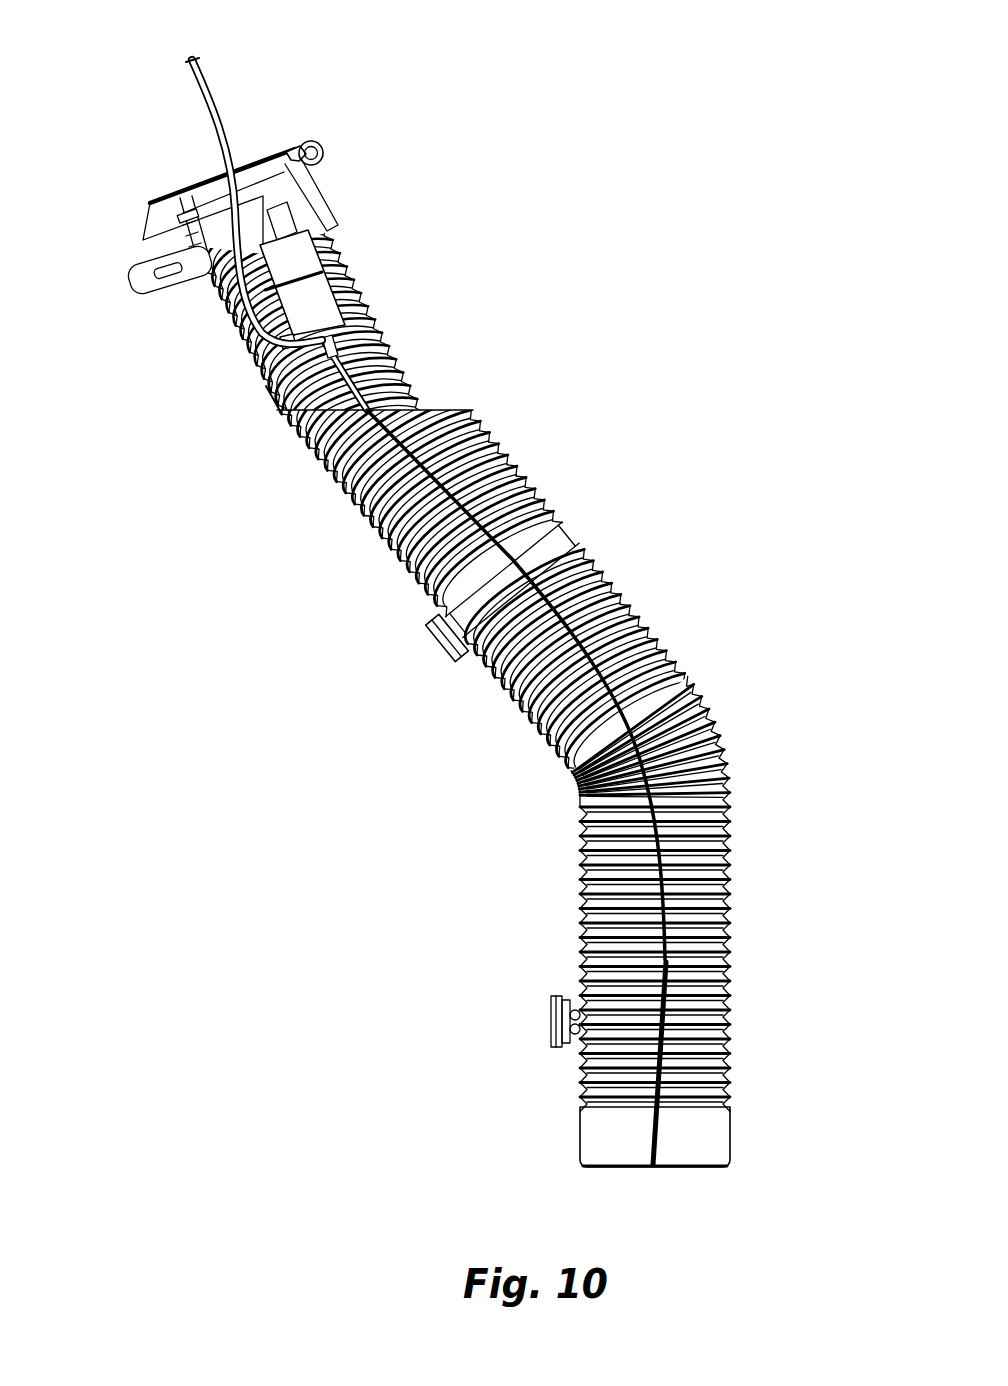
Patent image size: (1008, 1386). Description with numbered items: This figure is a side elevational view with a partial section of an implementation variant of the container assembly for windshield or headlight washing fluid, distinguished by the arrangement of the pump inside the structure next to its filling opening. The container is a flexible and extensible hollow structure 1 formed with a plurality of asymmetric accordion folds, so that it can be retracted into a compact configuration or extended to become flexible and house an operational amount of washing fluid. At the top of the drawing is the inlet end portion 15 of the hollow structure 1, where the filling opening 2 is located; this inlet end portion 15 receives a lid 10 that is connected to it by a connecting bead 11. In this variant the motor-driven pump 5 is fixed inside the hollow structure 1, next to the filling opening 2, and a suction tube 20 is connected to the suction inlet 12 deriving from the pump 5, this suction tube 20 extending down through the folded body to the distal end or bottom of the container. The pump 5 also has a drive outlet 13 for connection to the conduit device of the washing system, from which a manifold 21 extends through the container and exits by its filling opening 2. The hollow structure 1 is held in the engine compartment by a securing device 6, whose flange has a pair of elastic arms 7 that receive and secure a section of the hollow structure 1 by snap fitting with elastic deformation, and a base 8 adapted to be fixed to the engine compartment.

The hollow structure 1 is at (715, 645).
The filling opening 2 is at (302, 197).
The motor-driven pump 5 is at (360, 273).
The securing device 6 is at (440, 653).
The elastic arms 7 is at (566, 540).
The base 8 is at (468, 657).
The lid 10 is at (288, 147).
The connecting bead 11 is at (330, 143).
The suction inlet 12 is at (343, 334).
The drive outlet 13 is at (270, 398).
The inlet end portion 15 is at (160, 212).
The suction tube 20 is at (398, 378).
The manifold 21 is at (196, 79).